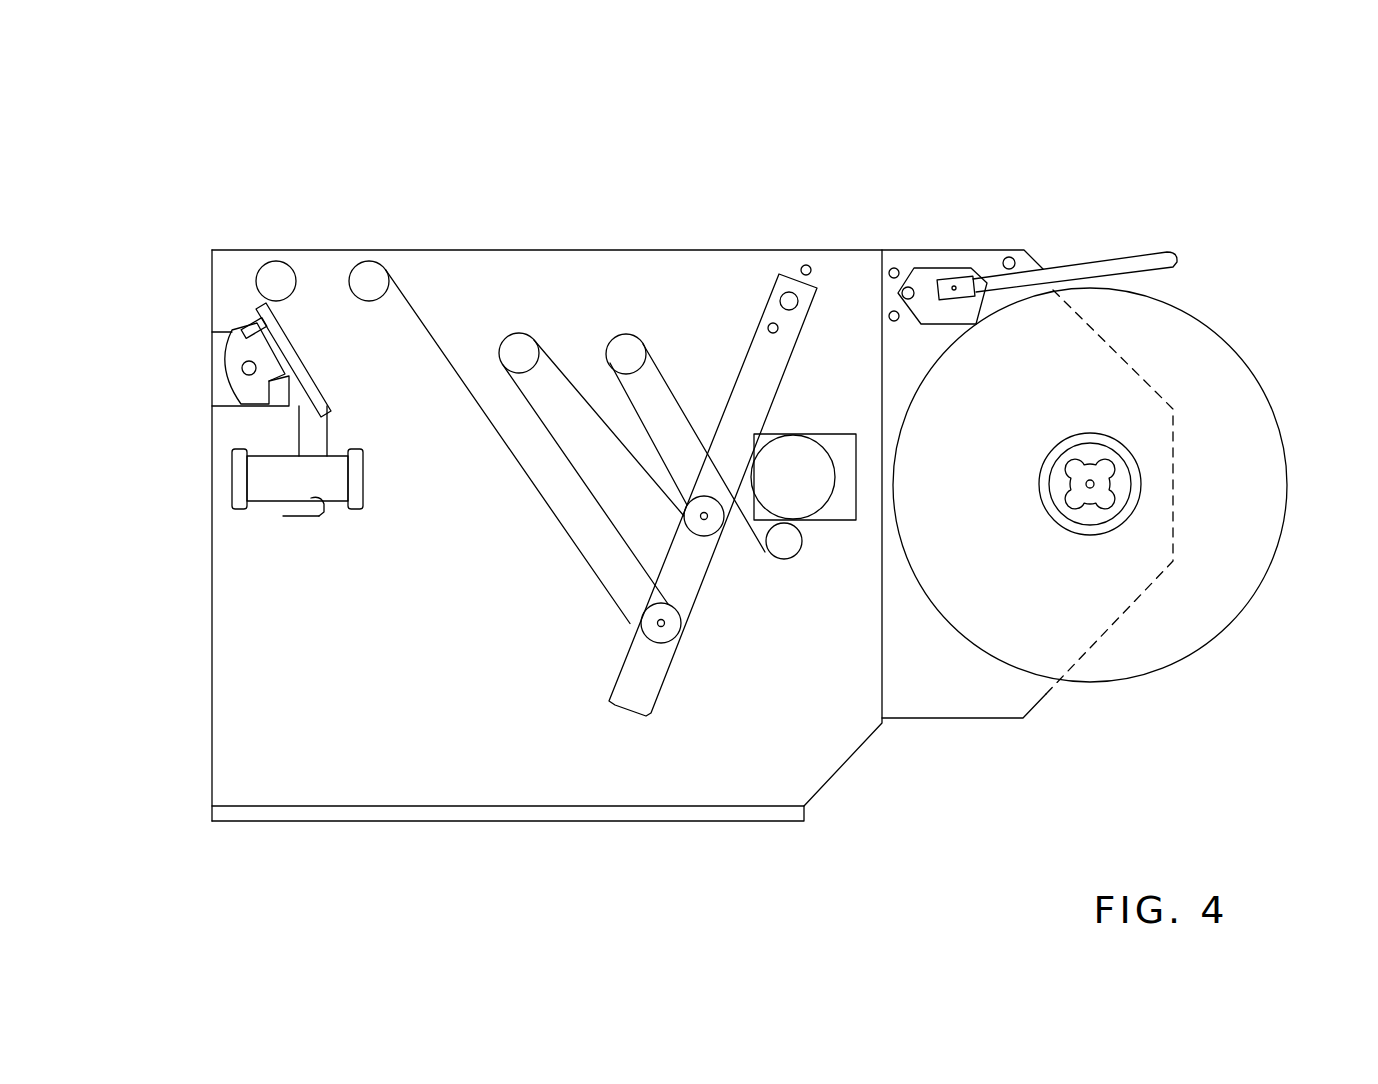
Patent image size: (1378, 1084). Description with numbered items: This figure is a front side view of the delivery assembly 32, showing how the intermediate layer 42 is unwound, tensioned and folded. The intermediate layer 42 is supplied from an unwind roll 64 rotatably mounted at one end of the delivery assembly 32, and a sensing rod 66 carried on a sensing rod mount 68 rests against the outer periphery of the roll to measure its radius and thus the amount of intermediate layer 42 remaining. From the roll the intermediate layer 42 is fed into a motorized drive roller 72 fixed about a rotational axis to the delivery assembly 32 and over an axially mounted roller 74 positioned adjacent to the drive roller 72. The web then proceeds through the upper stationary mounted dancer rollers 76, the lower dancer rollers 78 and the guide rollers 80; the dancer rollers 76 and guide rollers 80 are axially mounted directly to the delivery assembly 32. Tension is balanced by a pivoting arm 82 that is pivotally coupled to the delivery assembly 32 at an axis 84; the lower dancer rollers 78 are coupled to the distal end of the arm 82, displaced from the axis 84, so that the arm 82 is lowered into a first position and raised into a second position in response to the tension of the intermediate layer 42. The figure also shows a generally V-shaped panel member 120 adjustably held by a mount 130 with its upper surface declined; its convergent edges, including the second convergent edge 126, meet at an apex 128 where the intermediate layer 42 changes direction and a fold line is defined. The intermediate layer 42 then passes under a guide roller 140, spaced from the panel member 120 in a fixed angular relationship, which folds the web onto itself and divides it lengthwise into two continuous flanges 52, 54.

The delivery assembly 32 is at (975, 128).
The intermediate layer 42 is at (573, 370).
The flange 52 is at (322, 502).
The flange 54 is at (284, 520).
The unwind roll 64 is at (1085, 483).
The sensing rod 66 is at (1158, 252).
The sensing rod mount 68 is at (955, 278).
The motorized drive roller 72 is at (802, 492).
The axially mounted roller 74 is at (791, 558).
The upper stationary mounted dancer rollers 76 is at (518, 340).
The lower dancer rollers 78 is at (712, 535).
The guide rollers 80 is at (276, 262).
The pivoting arm 82 is at (762, 392).
The axis 84 is at (797, 300).
The panel member 120 is at (270, 403).
The second convergent edge 126 is at (186, 430).
The apex 128 is at (327, 403).
The mount 130 is at (232, 353).
The guide roller 140 is at (263, 498).